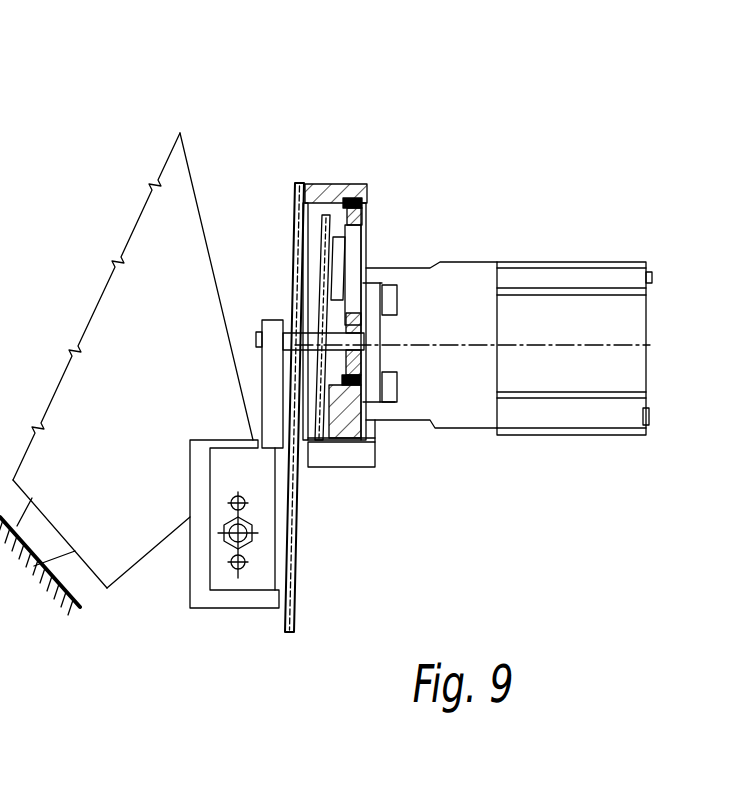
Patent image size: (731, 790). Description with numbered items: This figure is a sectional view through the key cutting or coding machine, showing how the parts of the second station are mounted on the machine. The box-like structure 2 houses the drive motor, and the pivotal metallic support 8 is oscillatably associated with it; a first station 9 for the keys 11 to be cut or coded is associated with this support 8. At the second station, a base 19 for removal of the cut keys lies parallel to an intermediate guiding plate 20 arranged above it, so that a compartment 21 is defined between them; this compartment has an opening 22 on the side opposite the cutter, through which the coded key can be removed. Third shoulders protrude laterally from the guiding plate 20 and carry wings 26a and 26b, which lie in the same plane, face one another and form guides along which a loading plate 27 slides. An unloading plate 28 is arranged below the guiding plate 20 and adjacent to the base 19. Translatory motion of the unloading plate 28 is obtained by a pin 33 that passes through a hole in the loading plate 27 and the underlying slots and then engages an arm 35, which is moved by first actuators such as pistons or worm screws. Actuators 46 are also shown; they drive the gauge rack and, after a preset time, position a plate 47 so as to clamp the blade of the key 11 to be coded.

The box-like structure 2 is at (117, 562).
The pivotal metallic support 8 is at (205, 597).
The first station 9 is at (12, 283).
The keys 11 is at (5, 160).
The base 19 is at (295, 603).
The intermediate guiding plate 20 is at (300, 205).
The compartment 21 is at (283, 390).
The opening 22 is at (307, 433).
The wing 26a is at (370, 187).
The wing 26b is at (355, 383).
The loading plate 27 is at (367, 216).
The unloading plate 28 is at (283, 407).
The pin 33 is at (367, 342).
The arm 35 is at (273, 330).
The actuators 46 is at (620, 360).
The plate 47 is at (377, 303).